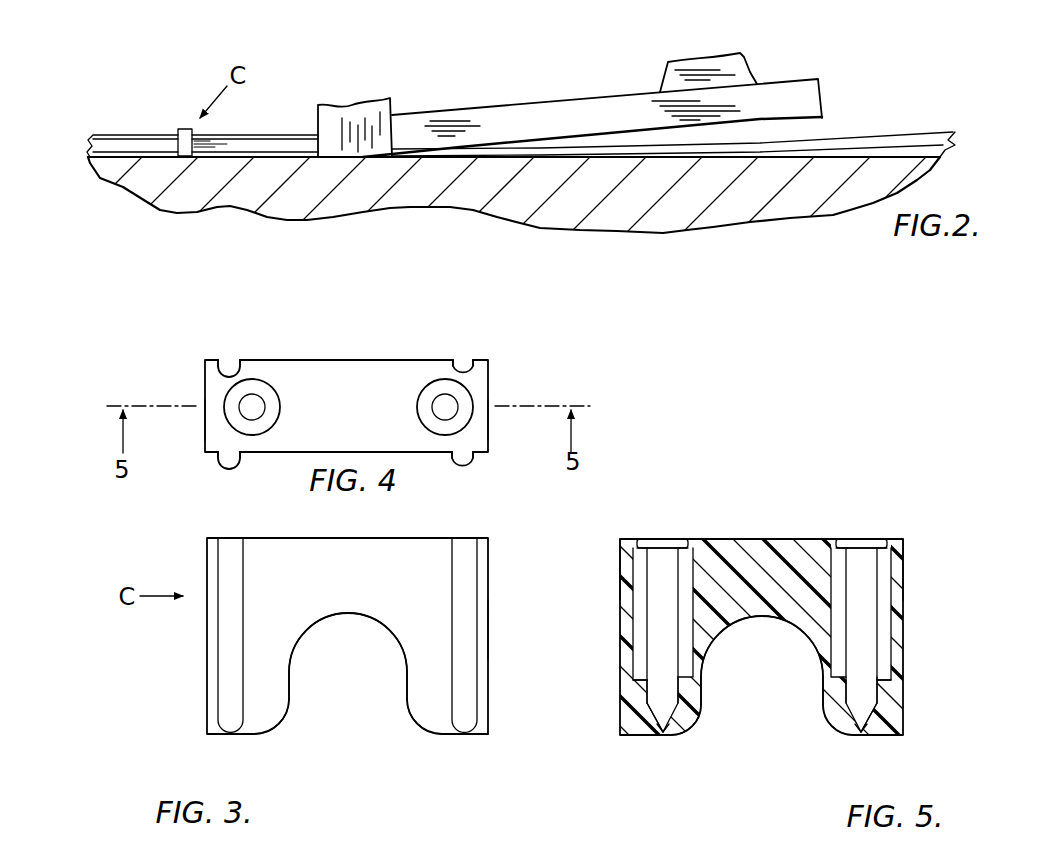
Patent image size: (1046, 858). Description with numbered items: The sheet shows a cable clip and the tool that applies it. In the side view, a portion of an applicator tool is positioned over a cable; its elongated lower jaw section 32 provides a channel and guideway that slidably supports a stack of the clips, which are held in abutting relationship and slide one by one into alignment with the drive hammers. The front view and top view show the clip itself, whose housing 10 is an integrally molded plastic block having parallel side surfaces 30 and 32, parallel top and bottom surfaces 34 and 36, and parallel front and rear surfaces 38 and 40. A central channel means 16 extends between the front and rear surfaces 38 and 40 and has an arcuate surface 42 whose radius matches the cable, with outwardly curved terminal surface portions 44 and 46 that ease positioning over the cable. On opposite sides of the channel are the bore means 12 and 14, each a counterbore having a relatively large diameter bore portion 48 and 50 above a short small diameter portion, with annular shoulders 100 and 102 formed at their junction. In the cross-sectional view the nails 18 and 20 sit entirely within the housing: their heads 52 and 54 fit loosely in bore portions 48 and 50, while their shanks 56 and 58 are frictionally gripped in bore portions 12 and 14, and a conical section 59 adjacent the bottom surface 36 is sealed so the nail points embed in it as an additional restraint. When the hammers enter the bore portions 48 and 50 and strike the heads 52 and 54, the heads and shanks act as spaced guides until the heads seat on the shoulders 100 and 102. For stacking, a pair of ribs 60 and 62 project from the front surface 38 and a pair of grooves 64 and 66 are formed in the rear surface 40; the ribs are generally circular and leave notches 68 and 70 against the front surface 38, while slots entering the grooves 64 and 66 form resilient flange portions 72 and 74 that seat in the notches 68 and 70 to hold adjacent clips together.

In FIG. 3, the housing 10 is at (200, 674).
In FIG. 4, the bore means 12 is at (240, 403).
In FIG. 5, the bore means 12 is at (646, 694).
In FIG. 4, the bore means 14 is at (458, 403).
In FIG. 5, the bore means 14 is at (878, 691).
In FIG. 3, the cable receiving channel means 16 is at (292, 657).
In FIG. 5, the cable receiving channel means 16 is at (704, 660).
In FIG. 5, the nail 18 is at (660, 641).
In FIG. 5, the nail 20 is at (862, 598).
In FIG. 4, the side surface 30 is at (206, 442).
In FIG. 5, the side surface 30 is at (620, 559).
In FIG. 2, the side surface 32 is at (551, 112).
In FIG. 4, the side surface 32 is at (490, 434).
In FIG. 3, the side surface 32 is at (489, 627).
In FIG. 5, the side surface 32 is at (904, 561).
In FIG. 4, the top surface 34 is at (327, 417).
In FIG. 3, the top surface 34 is at (276, 539).
In FIG. 5, the top surface 34 is at (762, 539).
In FIG. 3, the bottom surface 36 is at (478, 736).
In FIG. 4, the front surface 38 is at (406, 453).
In FIG. 3, the front surface 38 is at (406, 594).
In FIG. 5, the front surface 38 is at (705, 650).
In FIG. 4, the rear surface 40 is at (358, 360).
In FIG. 3, the arcuate surface 42 is at (358, 615).
In FIG. 5, the arcuate surface 42 is at (762, 616).
In FIG. 3, the outwardly curved terminal surface portion 44 is at (288, 728).
In FIG. 5, the outwardly curved terminal surface portion 44 is at (690, 733).
In FIG. 3, the outwardly curved terminal surface portion 46 is at (411, 728).
In FIG. 5, the outwardly curved terminal surface portion 46 is at (828, 727).
In FIG. 5, the large diameter bore portion 48 is at (633, 593).
In FIG. 5, the large diameter bore portion 50 is at (904, 578).
In FIG. 5, the head 52 is at (683, 539).
In FIG. 5, the head 54 is at (872, 539).
In FIG. 5, the nail shank 56 is at (660, 713).
In FIG. 5, the nail shank 58 is at (882, 713).
In FIG. 5, the conical section 59 is at (660, 741).
In FIG. 4, the interlocking rib 60 is at (229, 468).
In FIG. 3, the interlocking rib 60 is at (228, 578).
In FIG. 4, the interlocking rib 62 is at (468, 466).
In FIG. 3, the interlocking rib 62 is at (463, 593).
In FIG. 4, the interlocking groove 64 is at (229, 366).
In FIG. 4, the interlocking groove 66 is at (463, 366).
In FIG. 4, the notch 68 is at (217, 456).
In FIG. 4, the notch 70 is at (242, 456).
In FIG. 4, the resilient flange portion 72 is at (222, 362).
In FIG. 4, the resilient flange portion 74 is at (238, 362).
In FIG. 5, the annular shoulder 100 is at (646, 678).
In FIG. 5, the annular shoulder 102 is at (878, 683).